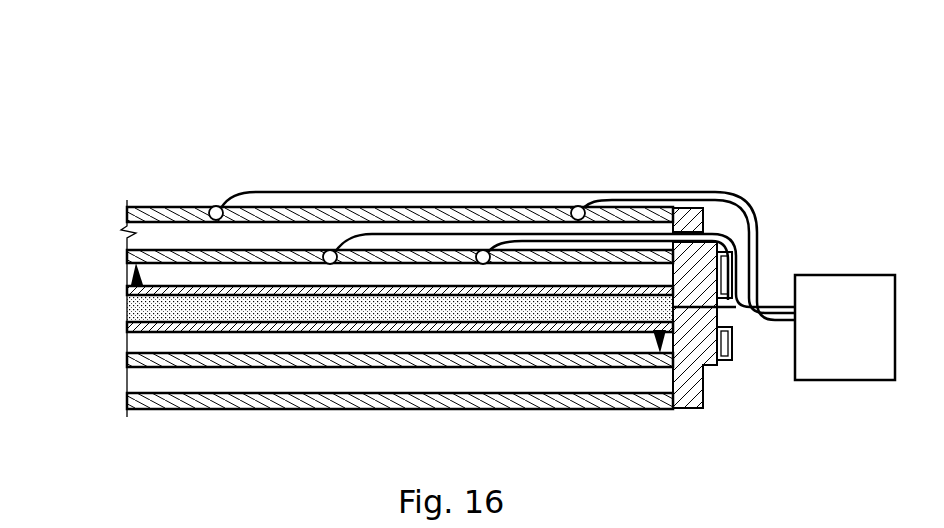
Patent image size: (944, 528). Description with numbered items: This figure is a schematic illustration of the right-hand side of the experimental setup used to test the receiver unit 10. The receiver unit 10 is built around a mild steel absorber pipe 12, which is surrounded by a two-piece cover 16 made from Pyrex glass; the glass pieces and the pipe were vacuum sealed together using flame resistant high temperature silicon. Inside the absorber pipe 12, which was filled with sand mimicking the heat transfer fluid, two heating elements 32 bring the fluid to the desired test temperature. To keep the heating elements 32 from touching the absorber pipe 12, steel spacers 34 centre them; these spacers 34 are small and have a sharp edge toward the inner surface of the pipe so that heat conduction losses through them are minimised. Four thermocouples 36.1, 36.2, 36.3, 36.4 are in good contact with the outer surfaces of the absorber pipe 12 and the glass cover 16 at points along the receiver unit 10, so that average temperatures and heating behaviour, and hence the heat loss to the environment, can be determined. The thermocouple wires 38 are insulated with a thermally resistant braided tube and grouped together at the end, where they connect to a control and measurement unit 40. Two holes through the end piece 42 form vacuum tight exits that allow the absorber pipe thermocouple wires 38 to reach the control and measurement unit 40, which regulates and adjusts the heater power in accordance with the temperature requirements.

The receiver unit 10 is at (708, 133).
The absorber pipe 12 is at (312, 362).
The cover 16 is at (200, 403).
The heating elements 32 is at (140, 308).
The spacers 34 is at (130, 277).
The thermocouple 36.1 is at (215, 206).
The thermocouple 36.2 is at (580, 206).
The thermocouple 36.3 is at (329, 250).
The thermocouple 36.4 is at (486, 250).
The thermocouple wires 38 is at (758, 212).
The control and measurement unit 40 is at (855, 308).
The end piece 42 is at (683, 392).